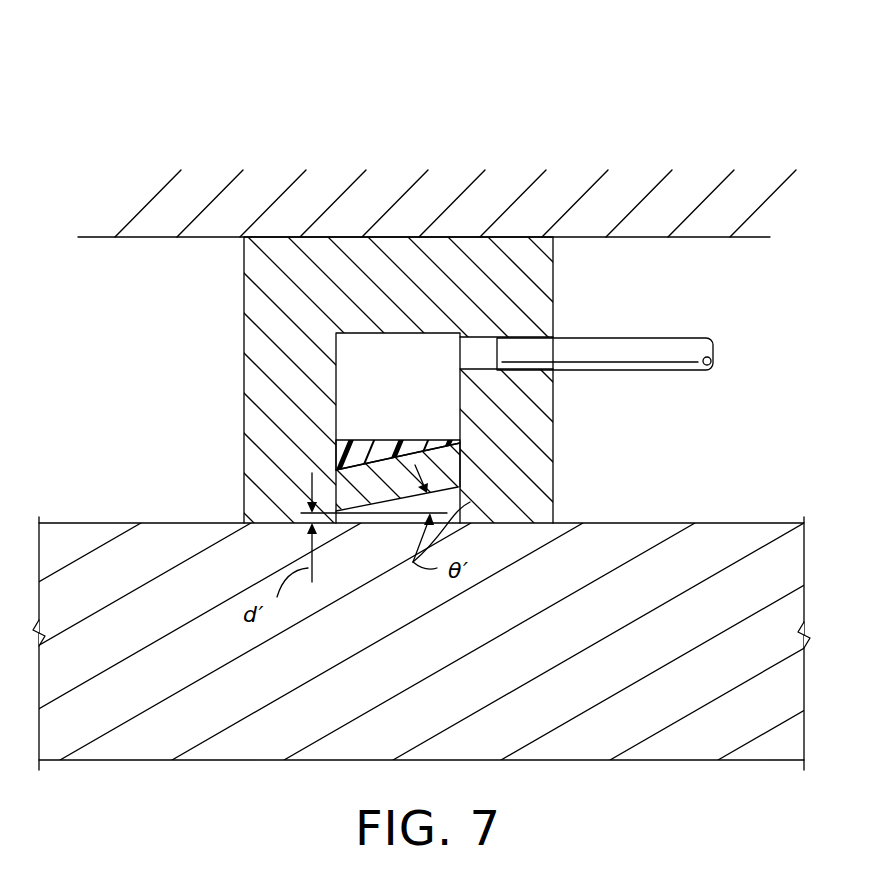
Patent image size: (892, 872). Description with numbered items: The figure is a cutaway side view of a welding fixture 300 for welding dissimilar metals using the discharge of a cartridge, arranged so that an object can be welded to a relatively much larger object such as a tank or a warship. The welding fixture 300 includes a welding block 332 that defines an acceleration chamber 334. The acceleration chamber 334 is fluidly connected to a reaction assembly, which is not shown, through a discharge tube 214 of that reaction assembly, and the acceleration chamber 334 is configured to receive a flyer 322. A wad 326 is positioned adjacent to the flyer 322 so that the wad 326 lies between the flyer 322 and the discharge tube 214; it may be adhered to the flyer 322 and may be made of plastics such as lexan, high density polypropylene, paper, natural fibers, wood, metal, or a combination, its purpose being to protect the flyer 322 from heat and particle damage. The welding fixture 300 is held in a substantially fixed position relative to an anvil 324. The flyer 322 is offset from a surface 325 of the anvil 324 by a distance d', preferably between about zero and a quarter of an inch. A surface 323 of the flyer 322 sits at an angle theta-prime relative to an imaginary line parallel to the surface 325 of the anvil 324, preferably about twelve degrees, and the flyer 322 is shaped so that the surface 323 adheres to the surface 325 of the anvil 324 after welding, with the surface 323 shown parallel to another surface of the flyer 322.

The welding fixture 300 is at (166, 98).
The acceleration chamber 334 is at (368, 345).
The welding block 332 is at (252, 292).
The discharge tube 214 is at (648, 342).
The wad 326 is at (338, 471).
The flyer 322 is at (462, 465).
The surface 323 is at (379, 501).
The surface 325 is at (473, 500).
The anvil 324 is at (741, 533).